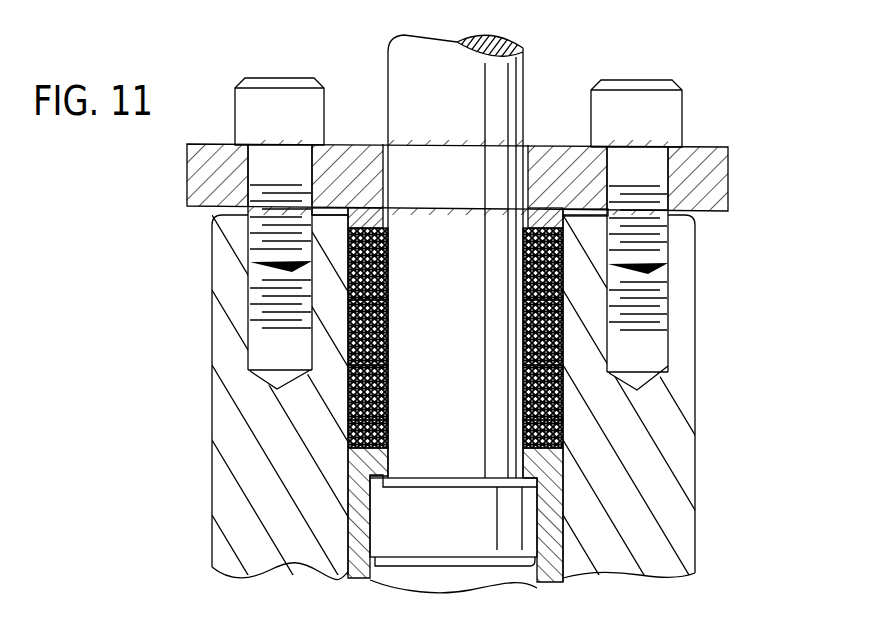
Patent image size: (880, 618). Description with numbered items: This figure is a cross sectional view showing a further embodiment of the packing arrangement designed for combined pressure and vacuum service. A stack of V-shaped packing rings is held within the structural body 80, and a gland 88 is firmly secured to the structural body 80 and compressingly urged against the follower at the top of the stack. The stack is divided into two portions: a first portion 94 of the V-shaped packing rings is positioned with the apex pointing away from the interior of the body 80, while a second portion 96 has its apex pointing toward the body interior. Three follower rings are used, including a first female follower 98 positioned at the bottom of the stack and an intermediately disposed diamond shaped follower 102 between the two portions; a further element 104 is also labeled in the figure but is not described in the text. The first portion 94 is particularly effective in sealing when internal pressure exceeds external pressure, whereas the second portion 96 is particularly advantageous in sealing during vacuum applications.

The structural body 80 is at (682, 267).
The gland 88 is at (707, 157).
The first portion of the stack of V-shaped packing rings 94 is at (387, 268).
The second portion of the V-shaped packing ring stack 96 is at (388, 390).
The first female follower 98 is at (388, 438).
The diamond shaped follower 102 is at (373, 340).
The gland follower 104 is at (388, 213).